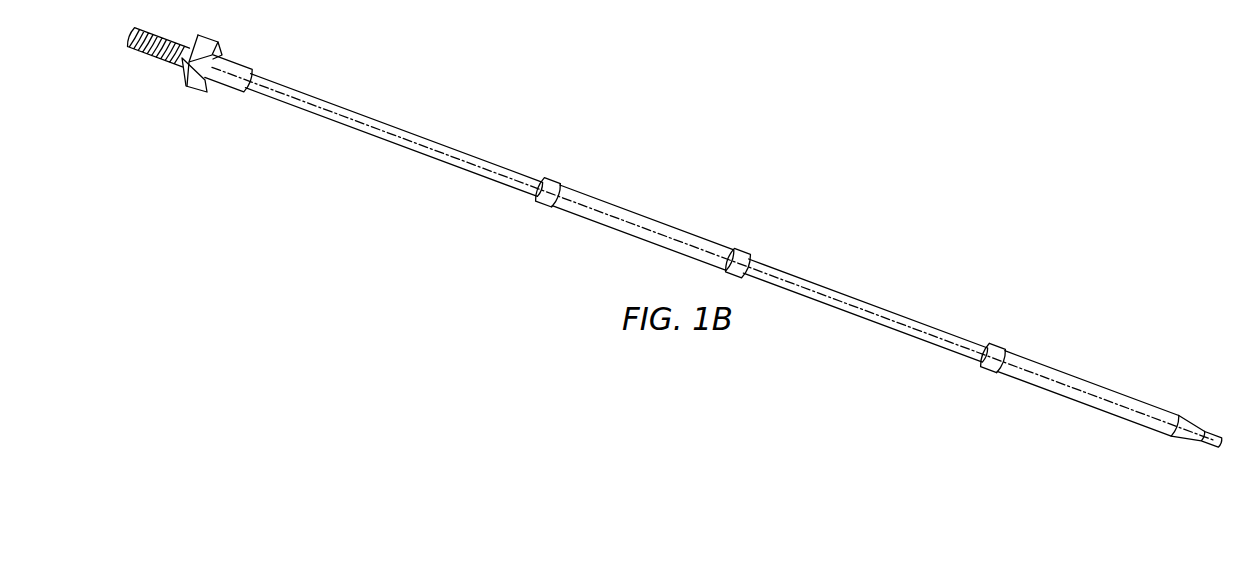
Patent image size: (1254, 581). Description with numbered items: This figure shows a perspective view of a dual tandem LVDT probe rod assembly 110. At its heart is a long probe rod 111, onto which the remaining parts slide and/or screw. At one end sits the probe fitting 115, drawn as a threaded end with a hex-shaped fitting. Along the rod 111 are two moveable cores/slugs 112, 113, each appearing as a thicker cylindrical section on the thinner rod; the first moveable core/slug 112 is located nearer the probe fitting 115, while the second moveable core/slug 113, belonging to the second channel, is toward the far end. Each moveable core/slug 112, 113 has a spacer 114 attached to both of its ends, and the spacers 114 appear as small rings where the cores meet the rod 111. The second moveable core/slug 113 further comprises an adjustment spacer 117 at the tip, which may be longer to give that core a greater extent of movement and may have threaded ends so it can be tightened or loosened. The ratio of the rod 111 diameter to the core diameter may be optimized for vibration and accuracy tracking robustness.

The dual tandem LVDT probe rod assembly 110 is at (212, 148).
The probe rod 111 is at (877, 307).
The moveable core/slug 112 is at (652, 213).
The moveable core/slug 113 is at (1105, 388).
The spacer 114 is at (552, 180).
The probe fitting 115 is at (224, 45).
The adjustment spacer 117 is at (1184, 446).